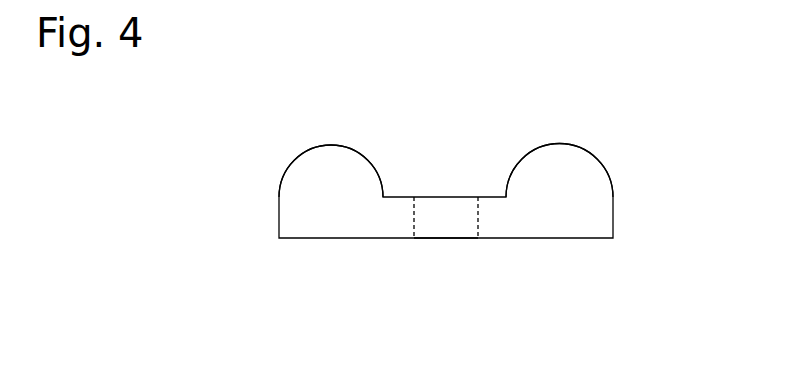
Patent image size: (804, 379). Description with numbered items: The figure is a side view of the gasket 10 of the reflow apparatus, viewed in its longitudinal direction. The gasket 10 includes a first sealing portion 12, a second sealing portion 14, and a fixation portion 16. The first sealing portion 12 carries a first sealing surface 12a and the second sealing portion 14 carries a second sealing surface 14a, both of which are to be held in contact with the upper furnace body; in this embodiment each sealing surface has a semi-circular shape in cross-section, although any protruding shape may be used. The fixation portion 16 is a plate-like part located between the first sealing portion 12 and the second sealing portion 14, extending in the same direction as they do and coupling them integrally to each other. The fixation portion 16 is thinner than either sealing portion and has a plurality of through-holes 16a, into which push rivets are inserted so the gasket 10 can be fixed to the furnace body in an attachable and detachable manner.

The gasket 10 is at (410, 195).
The first sealing portion 12 is at (305, 163).
The first sealing surface 12a is at (330, 144).
The second sealing portion 14 is at (587, 163).
The second lens surface 14a is at (561, 144).
The fixation portion 16 is at (446, 221).
The through-holes 16a is at (458, 231).